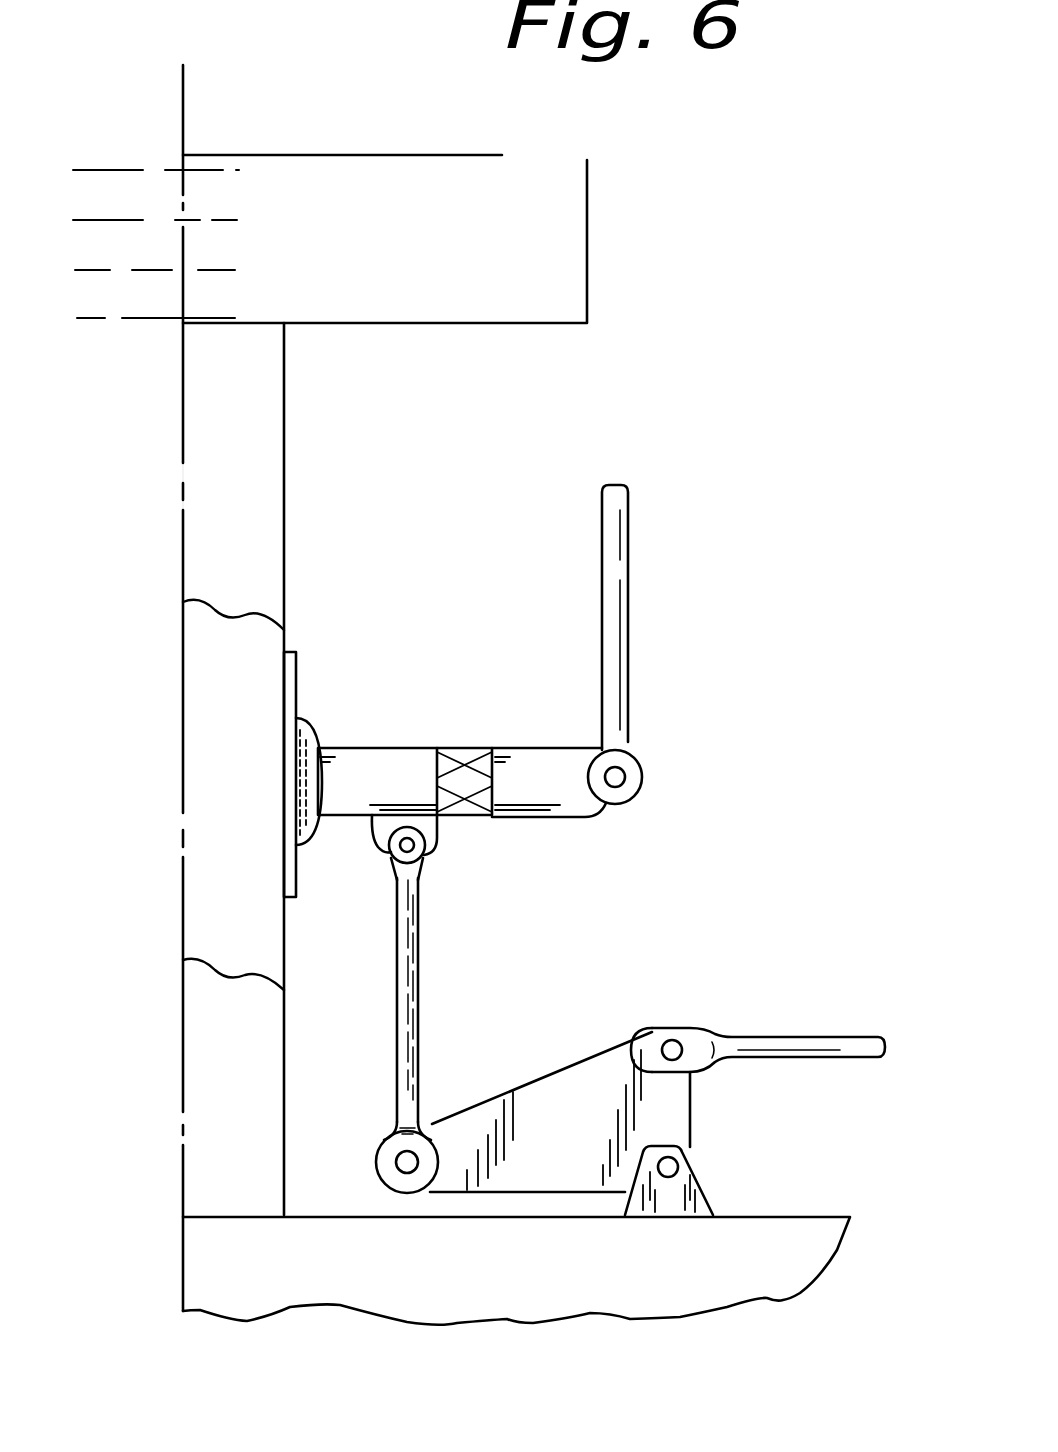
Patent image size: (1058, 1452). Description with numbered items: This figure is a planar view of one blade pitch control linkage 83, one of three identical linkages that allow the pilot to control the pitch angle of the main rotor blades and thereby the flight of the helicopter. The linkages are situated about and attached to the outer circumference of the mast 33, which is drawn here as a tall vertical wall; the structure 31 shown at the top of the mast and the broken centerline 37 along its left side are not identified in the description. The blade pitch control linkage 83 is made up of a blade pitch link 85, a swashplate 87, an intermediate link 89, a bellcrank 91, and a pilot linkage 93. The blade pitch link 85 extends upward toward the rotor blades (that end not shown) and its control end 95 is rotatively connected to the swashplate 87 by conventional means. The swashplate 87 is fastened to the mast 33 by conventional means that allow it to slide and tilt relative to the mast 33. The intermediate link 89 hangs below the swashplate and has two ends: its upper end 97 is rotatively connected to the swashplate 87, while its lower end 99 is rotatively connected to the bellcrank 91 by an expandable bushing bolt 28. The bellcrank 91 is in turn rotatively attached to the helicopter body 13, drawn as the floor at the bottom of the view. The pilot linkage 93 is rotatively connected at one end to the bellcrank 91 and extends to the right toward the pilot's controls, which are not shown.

The helicopter body 13 is at (837, 1250).
The expandable bushing bolt 28 is at (398, 1167).
The tank 31 is at (605, 285).
The mast 33 is at (284, 485).
The centerline of tank 37 is at (183, 1062).
The blade pitch control linkage 83 is at (790, 898).
The blade pitch link 85 is at (635, 610).
The swashplate 87 is at (362, 740).
The intermediate link 89 is at (396, 968).
The bellcrank 91 is at (527, 1082).
The pilot linkage 93 is at (818, 1037).
The control end 95 is at (642, 762).
The end 97 is at (420, 866).
The end 99 is at (382, 1140).